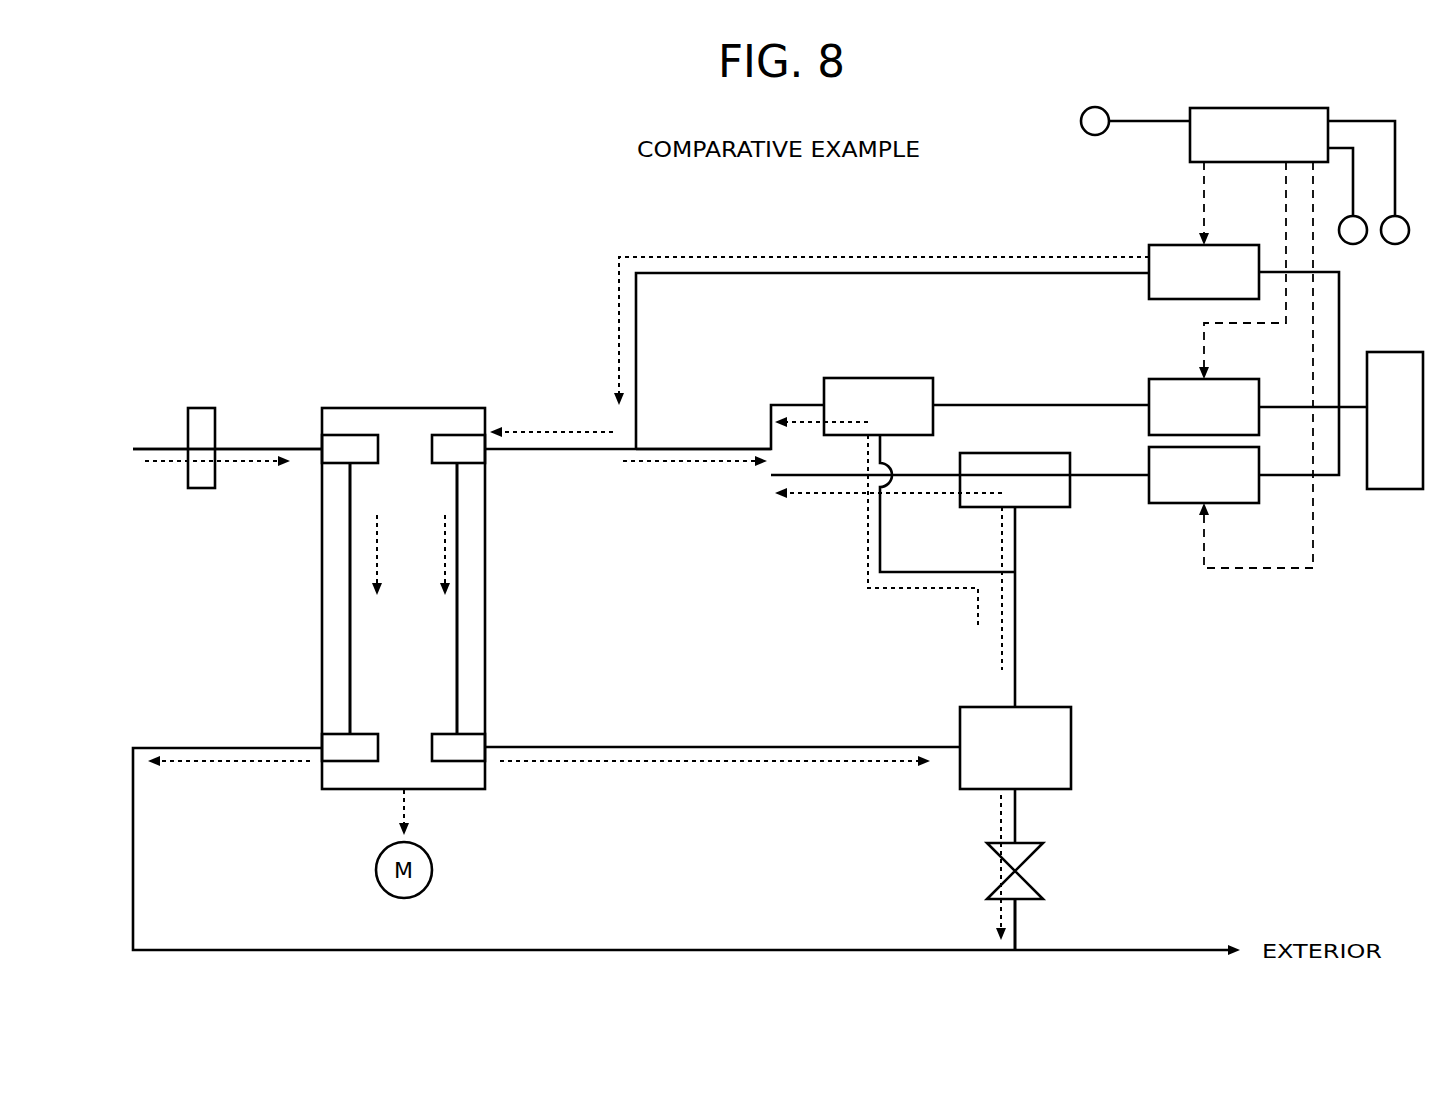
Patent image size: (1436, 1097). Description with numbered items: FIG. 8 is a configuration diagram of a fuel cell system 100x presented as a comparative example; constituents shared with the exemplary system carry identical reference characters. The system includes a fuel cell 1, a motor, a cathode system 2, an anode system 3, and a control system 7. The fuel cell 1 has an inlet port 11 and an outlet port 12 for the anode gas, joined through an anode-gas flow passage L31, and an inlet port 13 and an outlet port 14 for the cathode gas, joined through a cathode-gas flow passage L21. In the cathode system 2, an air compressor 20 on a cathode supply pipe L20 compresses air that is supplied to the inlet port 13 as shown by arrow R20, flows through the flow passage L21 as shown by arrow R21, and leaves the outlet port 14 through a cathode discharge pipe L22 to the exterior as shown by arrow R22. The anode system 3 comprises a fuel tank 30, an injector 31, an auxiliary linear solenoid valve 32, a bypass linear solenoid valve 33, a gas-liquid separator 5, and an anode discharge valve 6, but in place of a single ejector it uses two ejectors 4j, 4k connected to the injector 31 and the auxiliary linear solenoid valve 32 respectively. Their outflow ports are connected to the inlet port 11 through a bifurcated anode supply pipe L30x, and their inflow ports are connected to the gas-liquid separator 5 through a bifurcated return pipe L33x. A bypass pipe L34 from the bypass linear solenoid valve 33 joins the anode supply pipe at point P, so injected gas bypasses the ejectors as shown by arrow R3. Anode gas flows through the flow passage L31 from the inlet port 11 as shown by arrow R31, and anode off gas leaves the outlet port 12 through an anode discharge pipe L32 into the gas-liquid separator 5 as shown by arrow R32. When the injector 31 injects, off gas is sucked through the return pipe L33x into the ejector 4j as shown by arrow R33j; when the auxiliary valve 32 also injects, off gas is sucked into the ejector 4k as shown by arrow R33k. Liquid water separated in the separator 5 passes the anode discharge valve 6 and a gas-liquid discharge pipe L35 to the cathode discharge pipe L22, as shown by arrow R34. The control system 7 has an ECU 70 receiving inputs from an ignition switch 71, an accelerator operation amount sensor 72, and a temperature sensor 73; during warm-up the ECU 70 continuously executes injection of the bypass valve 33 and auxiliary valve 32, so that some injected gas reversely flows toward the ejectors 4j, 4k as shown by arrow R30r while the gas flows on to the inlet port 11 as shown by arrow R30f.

The fuel cell system 100x is at (336, 226).
The fuel cell 1 is at (458, 408).
The cathode system 2 is at (292, 350).
The anode system 3 is at (995, 230).
The ejector 4j is at (910, 378).
The ejector 4k is at (1040, 453).
The gas-liquid separator 5 is at (1042, 707).
The anode discharge valve 6 is at (1018, 842).
The control system 7 is at (1352, 102).
The inlet port 11 is at (460, 434).
The outlet port 12 is at (458, 762).
The inlet port 13 is at (345, 434).
The outlet port 14 is at (350, 762).
The air compressor 20 is at (200, 408).
The fuel tank 30 is at (1395, 352).
The injector 31 is at (1230, 379).
The auxiliary linear solenoid valve 32 is at (1262, 456).
The bypass linear solenoid valve 33 is at (1230, 245).
The ECU 70 is at (1300, 108).
The ignition switch 71 is at (1357, 216).
The accelerator operation amount sensor 72 is at (1399, 216).
The temperature sensor 73 is at (1105, 108).
The cathode supply pipe L20 is at (268, 434).
The cathode-gas flow passage L21 is at (350, 563).
The cathode discharge pipe L22 is at (266, 731).
The bifurcated anode supply pipe L30x is at (676, 449).
The anode-gas flow passage L31 is at (458, 563).
The anode discharge pipe L32 is at (752, 733).
The bifurcated return pipe L33x is at (1017, 660).
The bypass pipe L34 is at (900, 272).
The gas-liquid discharge pipe L35 is at (1018, 944).
The middle of the anode supply pipe P is at (640, 448).
The arrow R20 is at (219, 476).
The arrow R21 is at (384, 540).
The arrow R22 is at (229, 775).
The arrow R3 is at (881, 313).
The arrow R30f is at (551, 417).
The arrow R30r is at (695, 482).
The arrow R31 is at (440, 540).
The arrow R32 is at (715, 775).
The arrow R33j is at (927, 549).
The arrow R33k is at (976, 604).
The arrow R34 is at (973, 866).